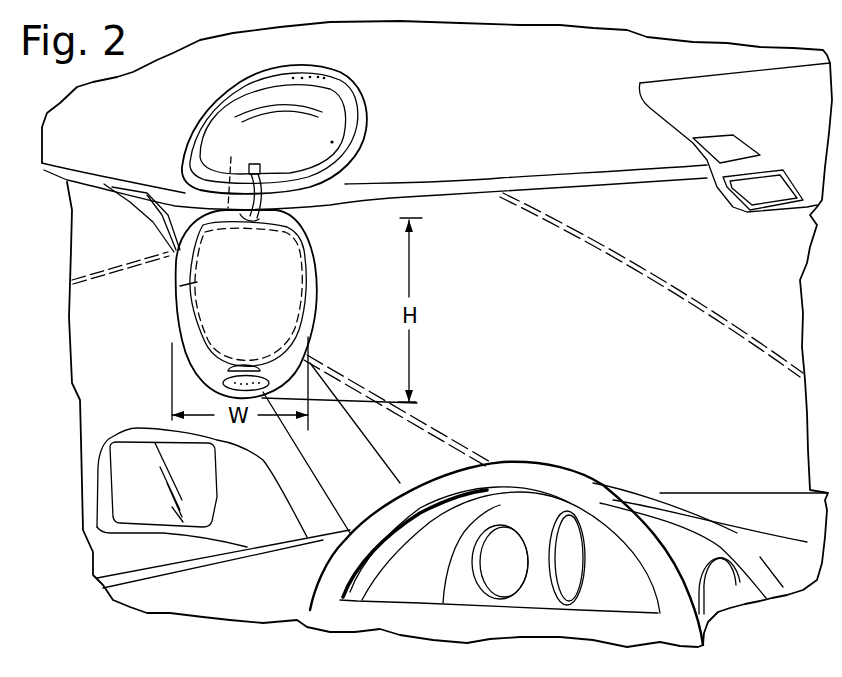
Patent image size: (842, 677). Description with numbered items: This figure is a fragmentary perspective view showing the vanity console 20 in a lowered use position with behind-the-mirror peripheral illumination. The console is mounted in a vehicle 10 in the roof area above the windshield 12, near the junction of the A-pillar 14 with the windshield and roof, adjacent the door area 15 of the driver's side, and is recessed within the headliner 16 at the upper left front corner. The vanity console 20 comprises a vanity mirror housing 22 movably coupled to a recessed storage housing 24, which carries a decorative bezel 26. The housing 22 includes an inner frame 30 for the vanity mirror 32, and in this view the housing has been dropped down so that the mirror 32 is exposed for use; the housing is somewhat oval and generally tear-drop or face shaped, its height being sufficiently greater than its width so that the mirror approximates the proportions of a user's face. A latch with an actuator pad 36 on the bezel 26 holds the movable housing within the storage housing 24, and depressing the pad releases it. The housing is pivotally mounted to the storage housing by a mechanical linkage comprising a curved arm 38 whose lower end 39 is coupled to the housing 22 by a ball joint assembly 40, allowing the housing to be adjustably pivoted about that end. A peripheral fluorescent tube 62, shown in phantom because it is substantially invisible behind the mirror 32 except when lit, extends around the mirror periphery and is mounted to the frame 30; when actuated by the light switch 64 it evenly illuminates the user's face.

The vehicle 10 is at (805, 230).
The windshield 12 is at (632, 333).
The A-pillar 14 is at (353, 452).
The door 15 is at (137, 377).
The headliner 16 is at (560, 110).
The vanity console 20 is at (376, 147).
The vanity mirror housing 22 is at (323, 292).
The storage housing 24 is at (376, 105).
The decorative bezel 26 is at (357, 92).
The inner frame 30 is at (298, 333).
The vanity mirror 32 is at (280, 260).
The actuator pad 36 is at (302, 74).
The curved arm 38 is at (279, 157).
The lower end 39 is at (278, 192).
The ball joint assembly 40 is at (233, 171).
The peripheral fluorescent tube 62 is at (180, 286).
The light switch 64 is at (245, 367).